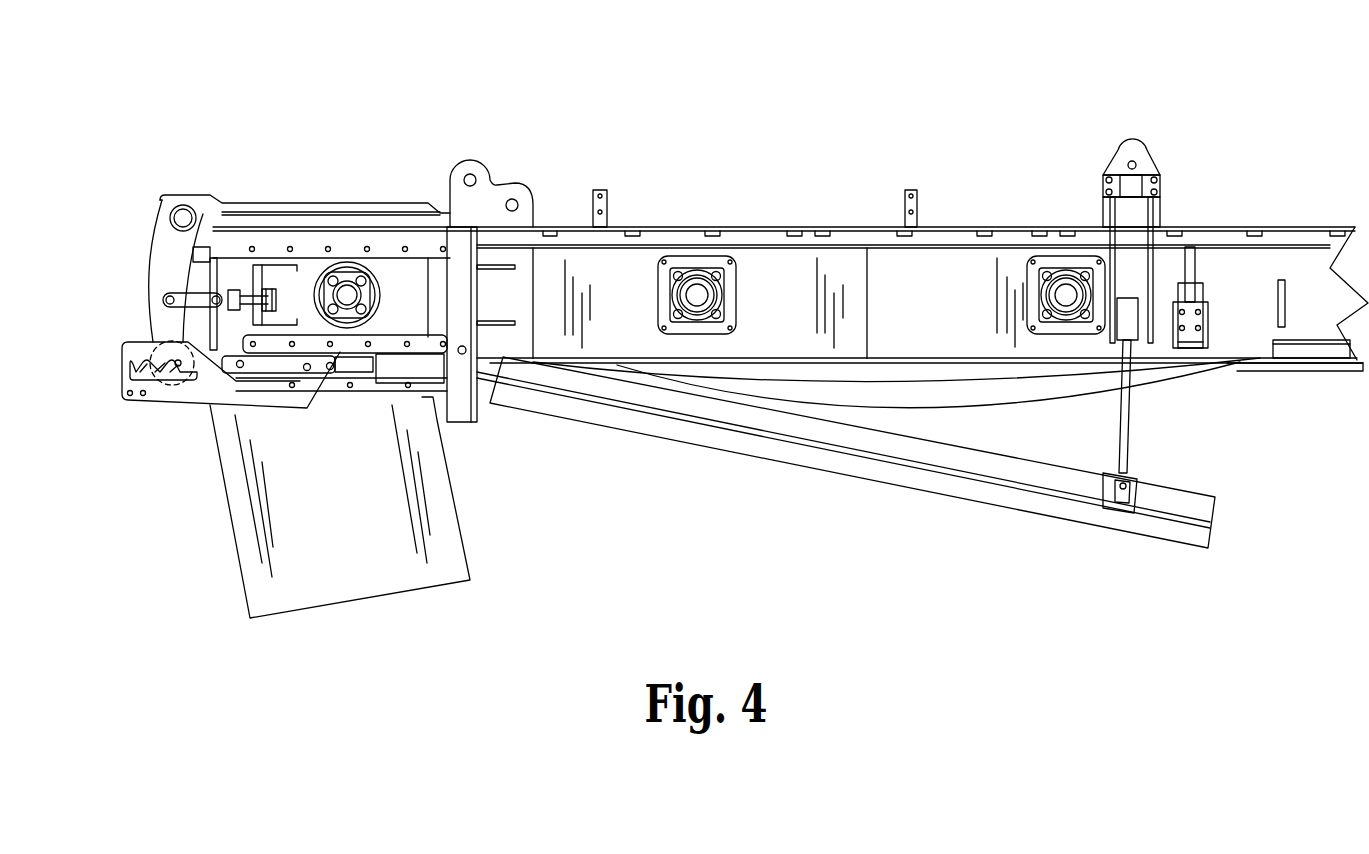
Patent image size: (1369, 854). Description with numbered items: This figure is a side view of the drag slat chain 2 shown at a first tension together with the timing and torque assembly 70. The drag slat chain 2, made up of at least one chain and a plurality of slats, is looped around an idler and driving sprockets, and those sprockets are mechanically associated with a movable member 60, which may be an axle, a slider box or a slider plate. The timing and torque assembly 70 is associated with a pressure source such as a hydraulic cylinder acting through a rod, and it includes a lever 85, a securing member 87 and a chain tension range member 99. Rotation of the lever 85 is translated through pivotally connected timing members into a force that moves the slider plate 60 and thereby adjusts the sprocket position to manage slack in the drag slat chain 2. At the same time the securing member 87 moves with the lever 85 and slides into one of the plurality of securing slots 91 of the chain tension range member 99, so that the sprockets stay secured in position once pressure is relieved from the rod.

The drag slat chain 2 is at (945, 395).
The movable member 60 is at (398, 282).
The timing and torque assembly 70 is at (122, 206).
The lever 85 is at (158, 261).
The securing member 87 is at (180, 368).
The securing slots 91 is at (128, 367).
The chain tension range member 99 is at (143, 410).